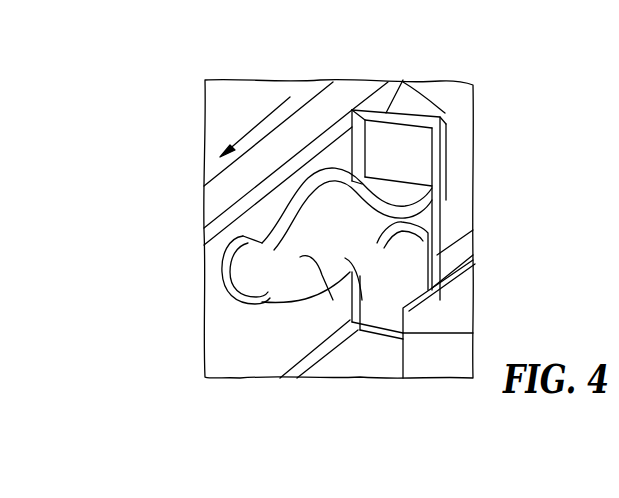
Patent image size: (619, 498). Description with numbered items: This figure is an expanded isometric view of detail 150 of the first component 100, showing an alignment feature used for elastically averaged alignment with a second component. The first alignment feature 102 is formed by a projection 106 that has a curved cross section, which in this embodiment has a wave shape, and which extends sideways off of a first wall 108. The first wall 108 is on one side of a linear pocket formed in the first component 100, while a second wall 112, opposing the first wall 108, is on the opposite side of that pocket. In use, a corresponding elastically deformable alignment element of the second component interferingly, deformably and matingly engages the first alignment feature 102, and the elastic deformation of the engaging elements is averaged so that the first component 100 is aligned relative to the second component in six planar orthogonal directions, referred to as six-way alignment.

The first component 100 is at (233, 358).
The first alignment feature 102 is at (368, 253).
The projection 106 is at (262, 268).
The first wall 108 is at (440, 110).
The second wall 112 is at (452, 308).
The detail 150 is at (443, 82).